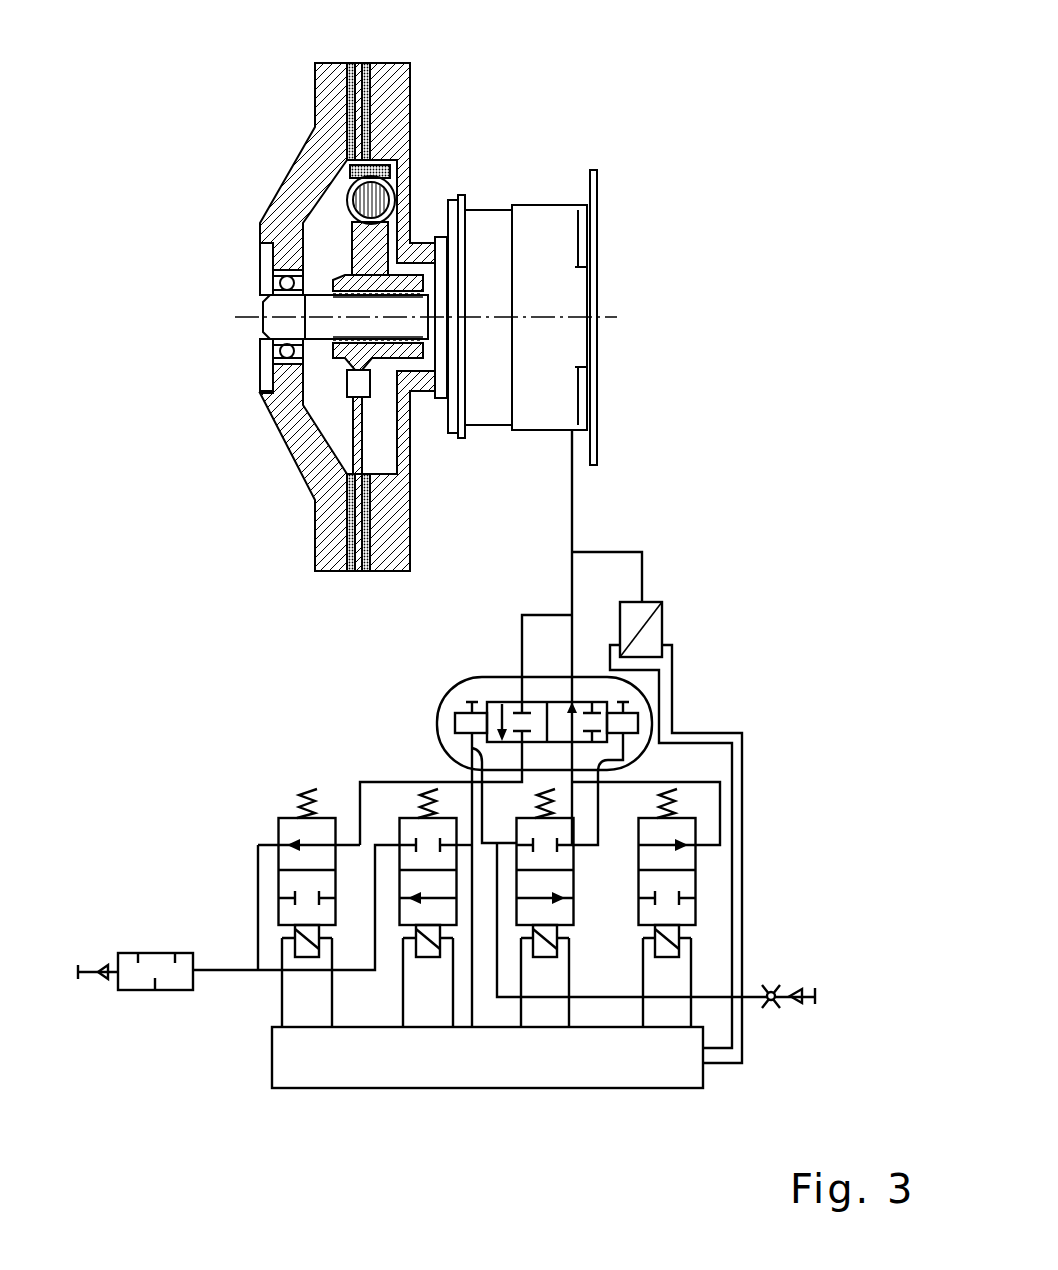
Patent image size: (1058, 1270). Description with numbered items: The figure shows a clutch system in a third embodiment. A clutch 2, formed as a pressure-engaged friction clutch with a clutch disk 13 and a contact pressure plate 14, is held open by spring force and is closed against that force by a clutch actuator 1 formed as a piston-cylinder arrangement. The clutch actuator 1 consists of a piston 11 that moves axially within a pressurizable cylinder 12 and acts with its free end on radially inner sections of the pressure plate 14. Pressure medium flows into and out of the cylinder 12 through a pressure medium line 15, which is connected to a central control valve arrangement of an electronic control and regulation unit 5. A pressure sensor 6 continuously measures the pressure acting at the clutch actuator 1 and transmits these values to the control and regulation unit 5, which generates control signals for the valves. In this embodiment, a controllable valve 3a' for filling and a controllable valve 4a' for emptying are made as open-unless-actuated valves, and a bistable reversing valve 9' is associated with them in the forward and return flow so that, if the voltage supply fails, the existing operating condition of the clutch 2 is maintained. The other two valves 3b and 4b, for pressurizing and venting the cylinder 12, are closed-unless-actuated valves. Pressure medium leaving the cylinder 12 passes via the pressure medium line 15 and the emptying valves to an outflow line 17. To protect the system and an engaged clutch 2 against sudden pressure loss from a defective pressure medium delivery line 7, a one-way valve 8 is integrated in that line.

The clutch actuator 1 is at (487, 238).
The clutch 2 is at (433, 160).
The controllable valve for filling 3a' is at (772, 908).
The valve for pressurizing 3b is at (532, 830).
The controllable valve for emptying 4a' is at (219, 896).
The valve for venting 4b is at (413, 828).
The electronic control and regulation unit 5 is at (500, 1058).
The pressure sensor 6 is at (658, 620).
The pressure medium delivery line 7 is at (808, 1000).
The one-way valve 8 is at (772, 983).
The bistable reversing valve 9' is at (619, 821).
The piston 11 is at (445, 235).
The cylinder 12 is at (548, 227).
The clutch disk 13 is at (358, 445).
The contact pressure plate 14 is at (350, 520).
The pressure medium line 15 is at (577, 528).
The outflow line 17 is at (232, 975).